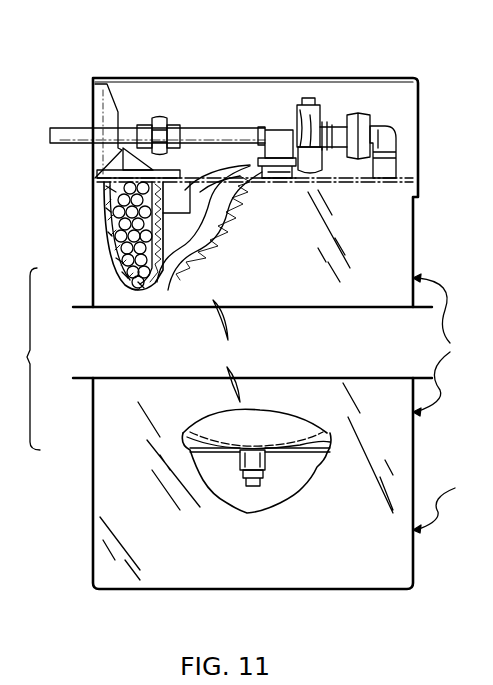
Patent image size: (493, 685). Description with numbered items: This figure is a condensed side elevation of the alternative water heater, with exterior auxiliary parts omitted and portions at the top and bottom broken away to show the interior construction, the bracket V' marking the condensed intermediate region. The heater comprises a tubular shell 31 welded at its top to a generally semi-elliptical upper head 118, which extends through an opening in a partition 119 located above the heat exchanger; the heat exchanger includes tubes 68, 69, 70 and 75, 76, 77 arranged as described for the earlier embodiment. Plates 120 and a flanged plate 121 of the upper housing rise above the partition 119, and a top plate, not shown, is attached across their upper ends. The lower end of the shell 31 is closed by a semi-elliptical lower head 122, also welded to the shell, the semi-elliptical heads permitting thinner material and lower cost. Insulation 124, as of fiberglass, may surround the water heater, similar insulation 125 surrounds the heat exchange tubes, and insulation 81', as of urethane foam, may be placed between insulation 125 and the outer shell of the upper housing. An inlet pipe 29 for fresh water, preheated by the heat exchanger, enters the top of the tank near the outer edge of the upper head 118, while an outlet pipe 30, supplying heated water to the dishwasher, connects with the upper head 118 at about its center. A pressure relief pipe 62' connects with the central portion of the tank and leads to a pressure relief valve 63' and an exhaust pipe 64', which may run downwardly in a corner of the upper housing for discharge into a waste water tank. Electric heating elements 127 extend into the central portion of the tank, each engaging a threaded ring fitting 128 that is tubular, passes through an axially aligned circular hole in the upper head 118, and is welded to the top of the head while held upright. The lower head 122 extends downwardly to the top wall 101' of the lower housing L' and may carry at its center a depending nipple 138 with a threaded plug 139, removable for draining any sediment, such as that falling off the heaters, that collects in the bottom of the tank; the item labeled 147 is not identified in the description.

The outlet pipe 30 is at (78, 72).
The flanged plate 121 is at (113, 84).
The partition 119 is at (170, 177).
The upper head 118 is at (187, 173).
The inlet pipe 29 is at (265, 132).
The electric heating elements 127 is at (285, 135).
The threaded ring fitting 128 is at (277, 168).
The pressure relief valve 63' is at (358, 98).
The exhaust pipe 64' is at (424, 143).
The pressure relief pipe 62' is at (324, 192).
The plates 120 is at (420, 150).
The housing wall 147 is at (453, 204).
The tubular shell 31 is at (163, 253).
The heat exchanger tube 68 is at (165, 285).
The heat exchanger tube 70 is at (113, 243).
The insulation 81' is at (78, 182).
The insulation 125 is at (110, 210).
The heat exchanger tube 77 is at (110, 235).
The heat exchanger tube 69 is at (120, 260).
The heat exchanger tube 76 is at (125, 277).
The heat exchanger tube 75 is at (143, 283).
The insulation 124 is at (190, 247).
The vessel section V' is at (440, 345).
The lower housing L' is at (442, 505).
The lower head 122 is at (265, 423).
The top wall 101' is at (269, 473).
The depending nipple 138 is at (237, 453).
The threaded plug 139 is at (250, 487).